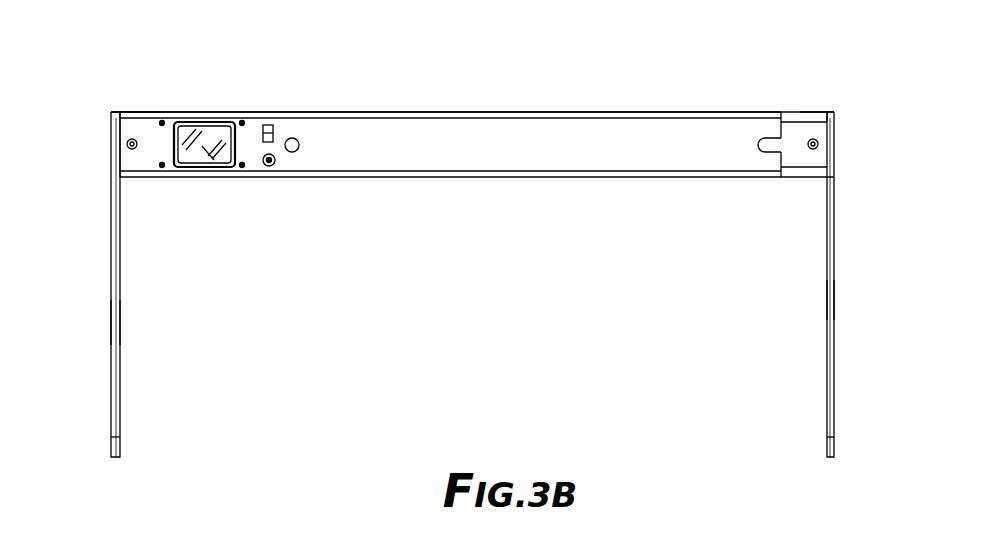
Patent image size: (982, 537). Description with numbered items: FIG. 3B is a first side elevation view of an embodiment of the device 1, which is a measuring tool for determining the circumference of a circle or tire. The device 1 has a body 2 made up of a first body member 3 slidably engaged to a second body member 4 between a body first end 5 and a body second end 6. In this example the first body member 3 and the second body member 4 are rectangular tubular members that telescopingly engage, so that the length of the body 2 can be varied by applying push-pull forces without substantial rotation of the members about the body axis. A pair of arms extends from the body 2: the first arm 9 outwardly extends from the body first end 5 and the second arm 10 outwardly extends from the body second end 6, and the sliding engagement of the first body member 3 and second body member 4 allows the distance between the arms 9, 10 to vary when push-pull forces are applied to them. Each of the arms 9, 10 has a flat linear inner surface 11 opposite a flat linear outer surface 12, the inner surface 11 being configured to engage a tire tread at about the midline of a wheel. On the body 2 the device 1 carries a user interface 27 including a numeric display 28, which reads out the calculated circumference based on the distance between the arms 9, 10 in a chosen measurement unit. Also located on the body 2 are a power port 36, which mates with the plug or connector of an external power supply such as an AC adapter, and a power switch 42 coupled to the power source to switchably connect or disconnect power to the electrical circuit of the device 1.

The device 1 is at (68, 24).
The body 2 is at (460, 100).
The first body member 3 is at (312, 111).
The second body member 4 is at (795, 111).
The body first end 5 is at (137, 110).
The body second end 6 is at (810, 113).
The first arm 9 is at (107, 232).
The second arm 10 is at (836, 250).
The inner surface 11 is at (120, 325).
The outer surface 12 is at (110, 323).
The user interface 27 is at (210, 138).
The numeric display 28 is at (213, 150).
The power port 36 is at (275, 162).
The power switch 42 is at (268, 112).